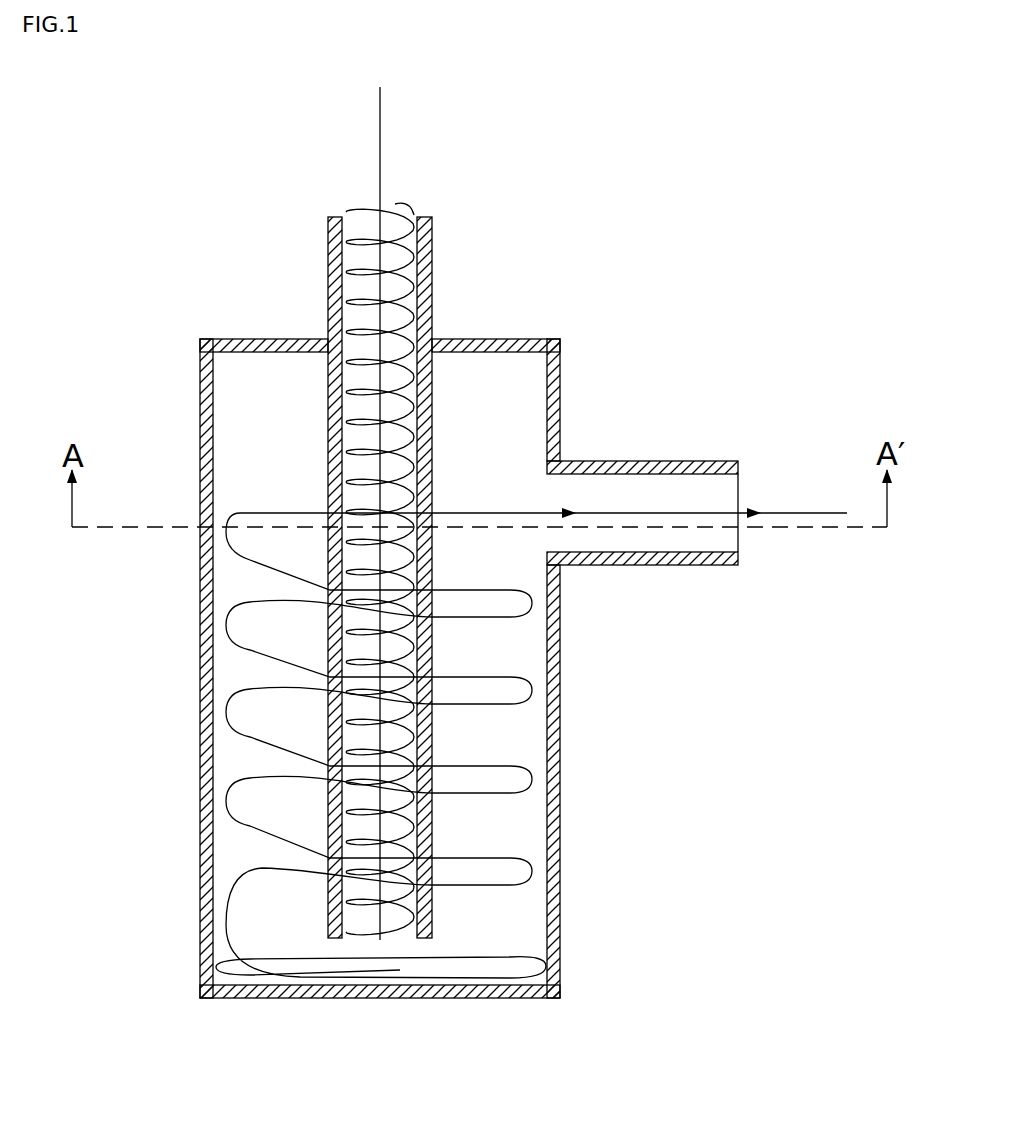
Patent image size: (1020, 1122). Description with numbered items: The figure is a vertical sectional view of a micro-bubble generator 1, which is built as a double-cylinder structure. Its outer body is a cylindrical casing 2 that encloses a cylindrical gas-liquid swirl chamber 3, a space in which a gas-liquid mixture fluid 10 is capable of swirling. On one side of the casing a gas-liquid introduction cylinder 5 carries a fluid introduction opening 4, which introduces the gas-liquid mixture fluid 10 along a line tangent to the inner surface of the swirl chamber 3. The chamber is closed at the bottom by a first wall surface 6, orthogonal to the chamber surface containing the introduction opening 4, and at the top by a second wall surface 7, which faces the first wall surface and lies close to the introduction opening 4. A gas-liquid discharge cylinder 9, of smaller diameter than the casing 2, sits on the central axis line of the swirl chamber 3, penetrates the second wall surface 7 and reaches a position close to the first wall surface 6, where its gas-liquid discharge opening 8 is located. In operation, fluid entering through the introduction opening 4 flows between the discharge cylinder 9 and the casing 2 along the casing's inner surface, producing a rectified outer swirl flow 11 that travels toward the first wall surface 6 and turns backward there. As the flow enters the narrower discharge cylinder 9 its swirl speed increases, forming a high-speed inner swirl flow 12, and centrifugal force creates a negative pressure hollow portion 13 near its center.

The micro-bubble generator 1 is at (588, 305).
The cylindrical casing 2 is at (560, 672).
The cylindrical gas-liquid swirl chamber 3 is at (245, 464).
The fluid introduction opening 4 is at (545, 495).
The gas-liquid introduction cylinder 5 is at (683, 460).
The first wall surface 6 is at (388, 1002).
The second wall surface 7 is at (283, 336).
The gas-liquid discharge opening 8 is at (375, 945).
The gas-liquid discharge cylinder 9 is at (328, 432).
The gas-liquid mixture fluid 10 is at (700, 508).
The outer swirl flow 11 is at (225, 615).
The inner swirl flow 12 is at (345, 262).
The negative pressure hollow portion 13 is at (381, 173).